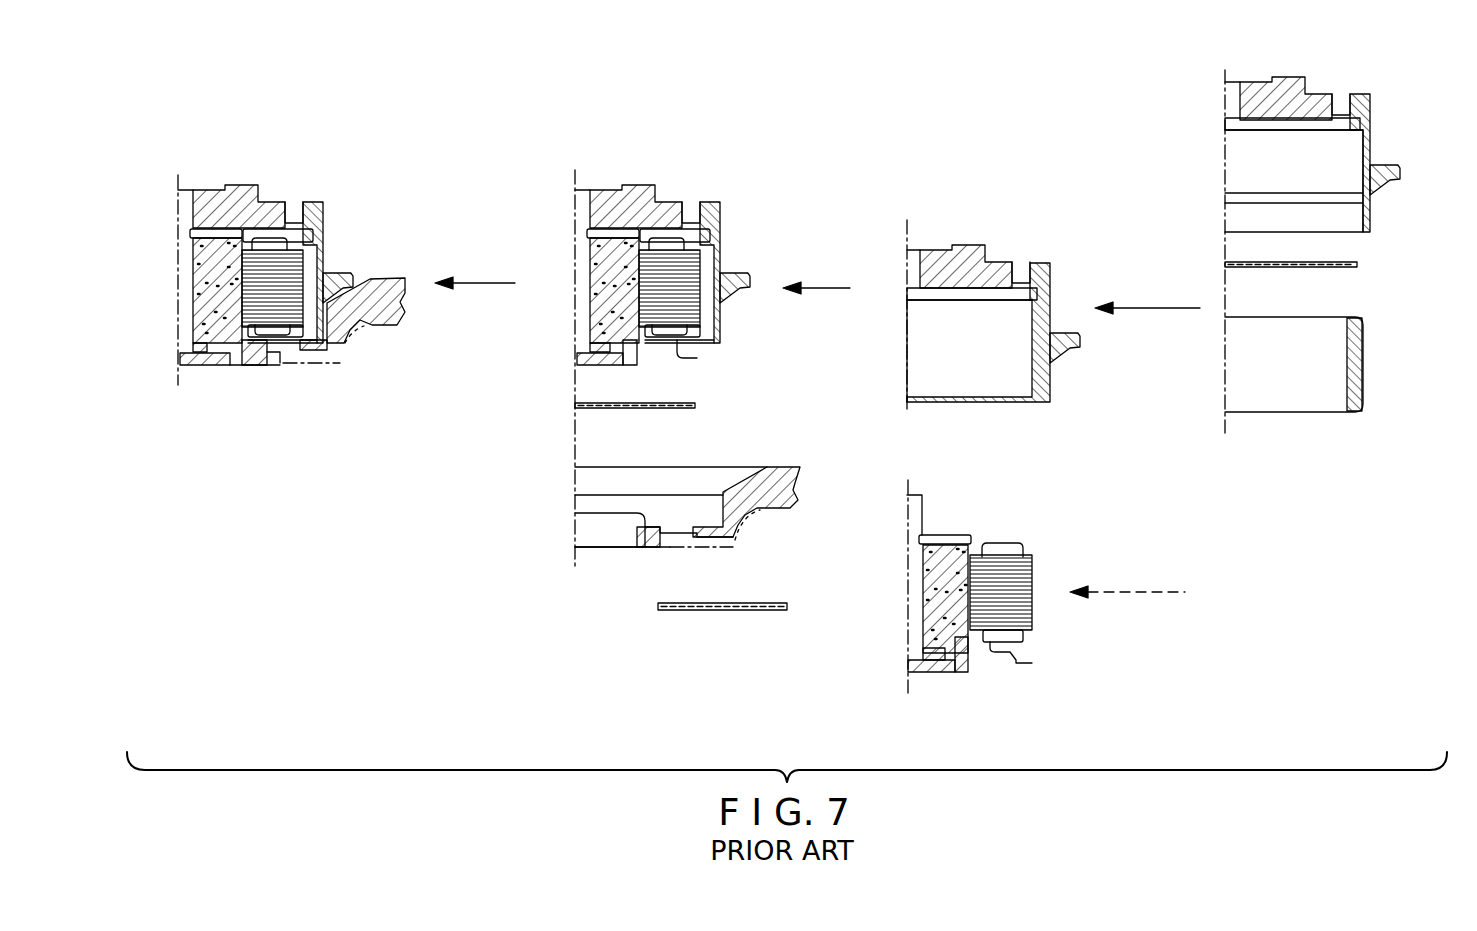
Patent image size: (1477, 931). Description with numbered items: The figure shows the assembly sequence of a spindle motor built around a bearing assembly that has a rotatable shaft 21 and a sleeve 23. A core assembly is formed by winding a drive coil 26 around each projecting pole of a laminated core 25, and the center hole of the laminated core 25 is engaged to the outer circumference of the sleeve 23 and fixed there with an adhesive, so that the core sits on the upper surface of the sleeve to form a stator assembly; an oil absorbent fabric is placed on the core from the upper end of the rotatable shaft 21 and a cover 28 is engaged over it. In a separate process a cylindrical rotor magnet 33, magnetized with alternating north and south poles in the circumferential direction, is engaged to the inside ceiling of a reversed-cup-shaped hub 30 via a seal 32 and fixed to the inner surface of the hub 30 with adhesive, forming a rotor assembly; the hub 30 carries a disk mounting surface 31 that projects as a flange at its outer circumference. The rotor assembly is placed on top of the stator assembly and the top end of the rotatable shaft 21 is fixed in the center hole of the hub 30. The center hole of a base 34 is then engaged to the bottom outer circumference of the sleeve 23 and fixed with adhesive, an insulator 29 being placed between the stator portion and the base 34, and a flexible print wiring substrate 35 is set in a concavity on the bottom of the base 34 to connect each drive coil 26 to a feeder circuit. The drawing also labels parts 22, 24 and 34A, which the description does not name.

The rotatable shaft 21 is at (180, 215).
The mounting plate 22 is at (217, 366).
The sleeve 23 is at (242, 342).
The base plate 24 is at (198, 366).
The laminated core 25 is at (283, 310).
The drive coil 26 is at (267, 240).
The cover 28 is at (945, 540).
The insulator 29 is at (608, 410).
The hub 30 is at (213, 200).
The disk mounting surface 31 is at (340, 273).
The seal 32 is at (1333, 268).
The rotor magnet 33 is at (327, 247).
The base 34 is at (380, 279).
The engaging tab of rotor member 34A is at (635, 523).
The flexible print wiring substrate 35 is at (733, 612).